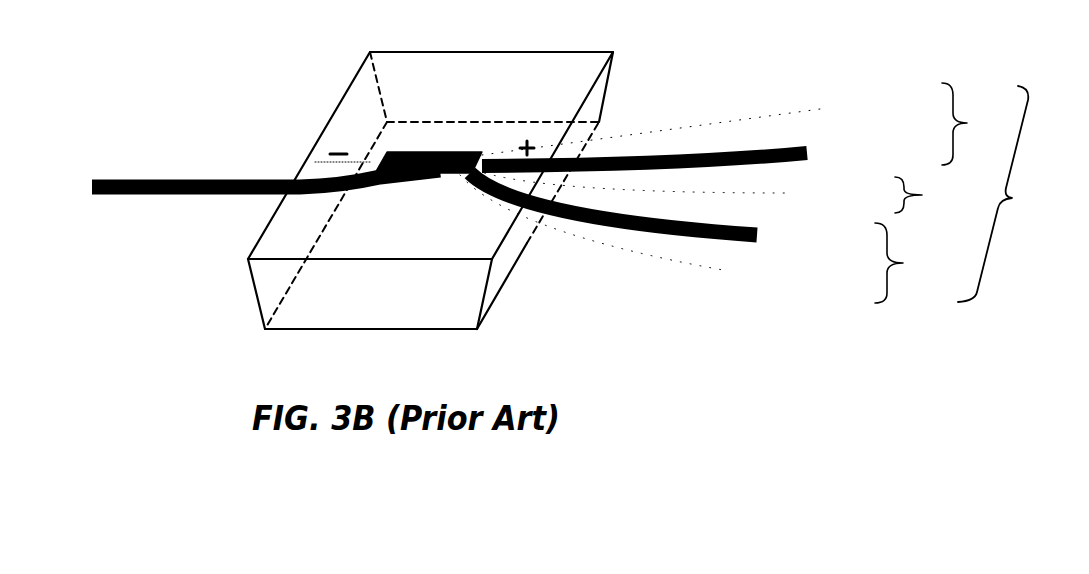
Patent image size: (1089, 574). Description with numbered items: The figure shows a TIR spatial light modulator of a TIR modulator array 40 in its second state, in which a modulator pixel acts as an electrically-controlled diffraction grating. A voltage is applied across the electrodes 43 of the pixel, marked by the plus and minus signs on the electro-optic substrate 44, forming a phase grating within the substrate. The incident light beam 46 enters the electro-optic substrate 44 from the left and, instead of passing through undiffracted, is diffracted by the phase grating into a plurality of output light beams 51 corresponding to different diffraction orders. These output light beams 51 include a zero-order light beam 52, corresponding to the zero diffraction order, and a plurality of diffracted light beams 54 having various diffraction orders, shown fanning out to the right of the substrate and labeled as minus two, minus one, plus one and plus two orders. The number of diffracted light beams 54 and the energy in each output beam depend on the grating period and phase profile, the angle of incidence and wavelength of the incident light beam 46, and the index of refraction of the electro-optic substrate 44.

The TIR modulator array 40 is at (336, 113).
The electrodes 43 is at (417, 152).
The electro-optic substrate 44 is at (604, 98).
The incident light beam 46 is at (182, 178).
The output light beams 51 is at (900, 194).
The zero-order light beam 52 is at (715, 191).
The diffracted light beams 54 is at (730, 193).